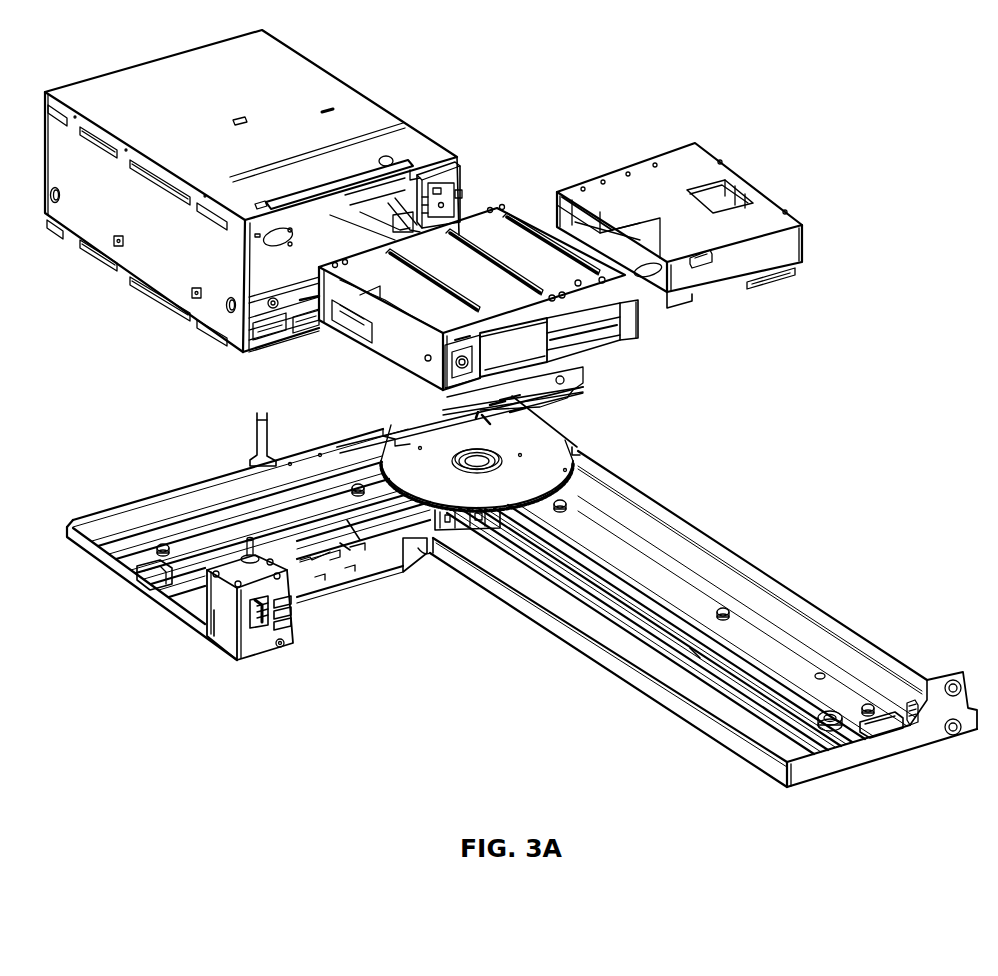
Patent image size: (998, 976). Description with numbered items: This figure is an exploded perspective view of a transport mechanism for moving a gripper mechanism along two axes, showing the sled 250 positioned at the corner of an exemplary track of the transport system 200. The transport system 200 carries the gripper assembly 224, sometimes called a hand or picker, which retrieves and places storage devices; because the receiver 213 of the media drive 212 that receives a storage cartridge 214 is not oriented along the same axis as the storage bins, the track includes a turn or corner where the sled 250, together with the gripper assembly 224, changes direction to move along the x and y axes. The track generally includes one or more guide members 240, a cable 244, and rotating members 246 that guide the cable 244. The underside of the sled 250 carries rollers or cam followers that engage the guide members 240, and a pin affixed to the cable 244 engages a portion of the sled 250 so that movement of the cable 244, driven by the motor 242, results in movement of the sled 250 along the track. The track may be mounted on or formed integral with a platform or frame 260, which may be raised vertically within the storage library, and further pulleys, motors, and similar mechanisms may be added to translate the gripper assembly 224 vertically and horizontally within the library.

The transport system 200 is at (705, 512).
The media drive 212 is at (318, 75).
The receiver 213 is at (394, 192).
The storage cartridge 214 is at (695, 160).
The gripper assembly 224 is at (508, 237).
The guide member 240 is at (180, 520).
The motor 242 is at (233, 577).
The cable 244 is at (347, 520).
The rotating member 246 is at (157, 582).
The sled 250 is at (548, 440).
The platform or frame 260 is at (583, 623).